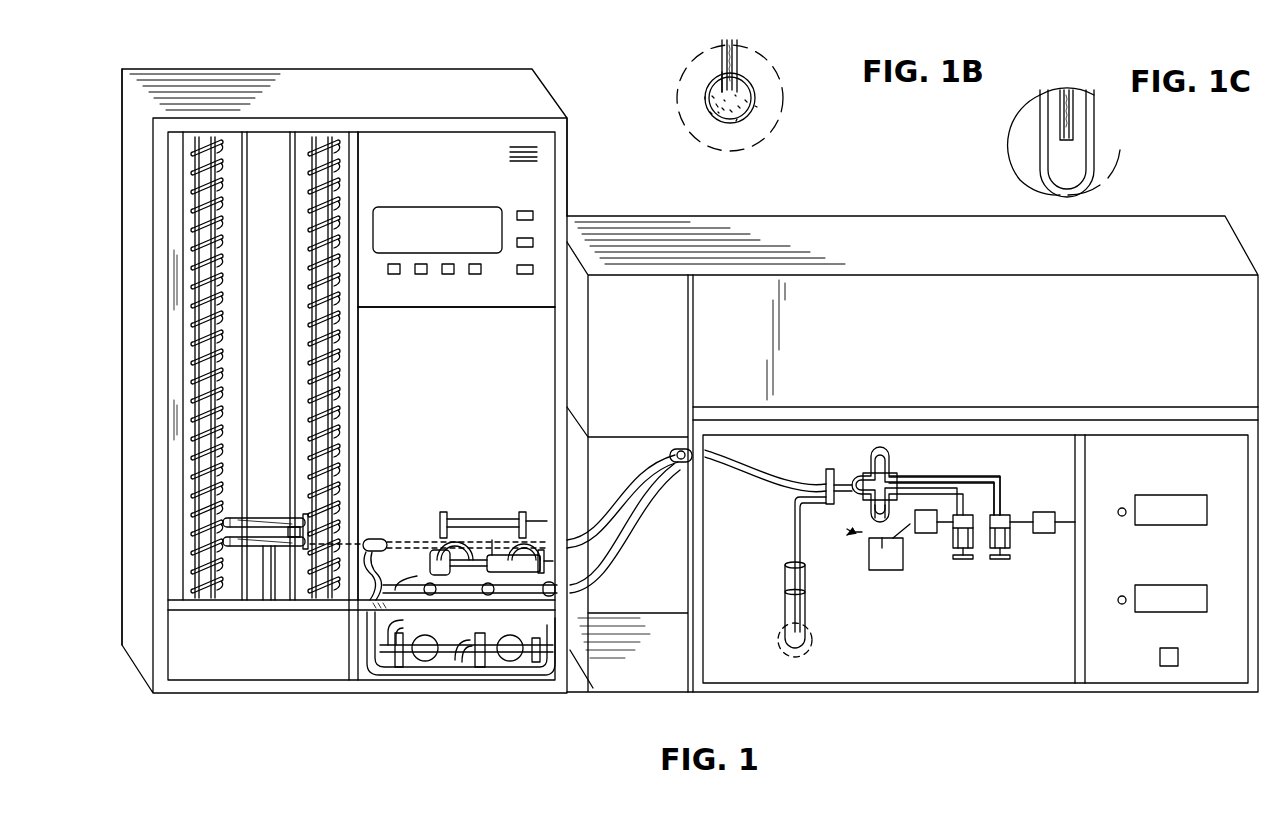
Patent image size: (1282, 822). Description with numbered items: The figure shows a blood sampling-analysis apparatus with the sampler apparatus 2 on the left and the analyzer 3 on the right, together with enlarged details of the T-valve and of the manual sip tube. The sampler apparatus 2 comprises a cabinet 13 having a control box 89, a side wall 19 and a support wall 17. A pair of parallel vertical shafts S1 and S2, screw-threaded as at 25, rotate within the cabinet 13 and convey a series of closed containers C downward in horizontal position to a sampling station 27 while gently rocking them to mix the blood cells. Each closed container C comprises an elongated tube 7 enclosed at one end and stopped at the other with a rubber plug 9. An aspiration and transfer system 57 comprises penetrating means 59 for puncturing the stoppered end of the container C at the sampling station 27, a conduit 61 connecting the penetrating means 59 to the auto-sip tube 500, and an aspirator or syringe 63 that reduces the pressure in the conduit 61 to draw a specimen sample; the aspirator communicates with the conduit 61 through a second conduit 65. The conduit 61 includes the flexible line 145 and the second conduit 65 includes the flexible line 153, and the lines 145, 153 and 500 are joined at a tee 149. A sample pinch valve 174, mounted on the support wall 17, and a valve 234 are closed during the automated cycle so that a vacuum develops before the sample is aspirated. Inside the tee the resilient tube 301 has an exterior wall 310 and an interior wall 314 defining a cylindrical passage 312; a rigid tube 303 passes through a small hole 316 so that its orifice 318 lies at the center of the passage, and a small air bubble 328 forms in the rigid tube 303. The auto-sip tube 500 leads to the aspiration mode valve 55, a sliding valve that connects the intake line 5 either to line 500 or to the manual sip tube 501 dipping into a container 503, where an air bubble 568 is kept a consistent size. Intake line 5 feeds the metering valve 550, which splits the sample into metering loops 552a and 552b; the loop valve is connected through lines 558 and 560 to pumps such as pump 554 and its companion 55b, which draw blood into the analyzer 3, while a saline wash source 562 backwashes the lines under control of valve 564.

In FIG. 1, the cabinet 13 is at (428, 84).
In FIG. 1, the side wall 19 is at (135, 176).
In FIG. 1, the vertical shaft S1 is at (212, 136).
In FIG. 1, the vertical shaft S2 is at (322, 137).
In FIG. 1, the sampler apparatus 2 is at (578, 146).
In FIG. 1, the control box 89 is at (527, 187).
In FIG. 1, the aspiration and transfer system 57 is at (500, 335).
In FIG. 1, the screw threads 25 is at (332, 405).
In FIG. 1, the rubber plug 9 is at (307, 520).
In FIG. 1, the closed container C is at (270, 515).
In FIG. 1, the tubular body 7 is at (262, 548).
In FIG. 1, the sampling station 27 is at (276, 560).
In FIG. 1, the support wall 17 is at (402, 562).
In FIG. 1, the penetrating means 59 is at (420, 540).
In FIG. 1, the conduit 61 is at (477, 533).
In FIG. 1, the aspirator or syringe 63 is at (530, 547).
In FIG. 1, the valve 234 is at (417, 578).
In FIG. 1, the second conduit 65 is at (437, 595).
In FIG. 1, the sample pinch valve 174 is at (480, 595).
In FIG. 1, the analyzer 3 is at (880, 212).
In FIG. 1, the line of flexible tubing 145 is at (625, 485).
In FIG. 1, the line of flexible tubing 153 is at (620, 530).
In FIG. 1, the tee 149 is at (672, 452).
In FIG. 1B, the tee 149 is at (778, 138).
In FIG. 1, the auto-sip tube 500 is at (773, 470).
In FIG. 1, the aspiration mode valve 55 is at (825, 470).
In FIG. 1, the intake line 5 is at (851, 490).
In FIG. 1, the metering loop 552a is at (885, 447).
In FIG. 1, the metering valve 550 is at (898, 468).
In FIG. 1, the line 558 is at (963, 493).
In FIG. 1, the line 560 is at (1003, 490).
In FIG. 1, the pump 554 is at (975, 545).
In FIG. 1, the valve 55b is at (1013, 547).
In FIG. 1, the valve 564 is at (928, 535).
In FIG. 1, the saline wash source 562 is at (895, 572).
In FIG. 1, the metering loop 552b is at (865, 518).
In FIG. 1, the sip tube 501 is at (790, 522).
In FIG. 1C, the sip tube 501 is at (1072, 93).
In FIG. 1, the container 503 is at (783, 603).
In FIG. 1C, the container 503 is at (1090, 122).
In FIG. 1, the air bubble 568 is at (782, 634).
In FIG. 1C, the air bubble 568 is at (1073, 130).
In FIG. 1B, the exterior wall 310 is at (760, 82).
In FIG. 1B, the air bubble 328 is at (753, 97).
In FIG. 1B, the rigid tube 303 is at (742, 57).
In FIG. 1B, the small hole 316 is at (720, 72).
In FIG. 1B, the interior wall 314 is at (705, 97).
In FIG. 1B, the cylindrical passage 312 is at (710, 112).
In FIG. 1B, the orifice 318 is at (737, 119).
In FIG. 1B, the resilient tube 301 is at (757, 107).